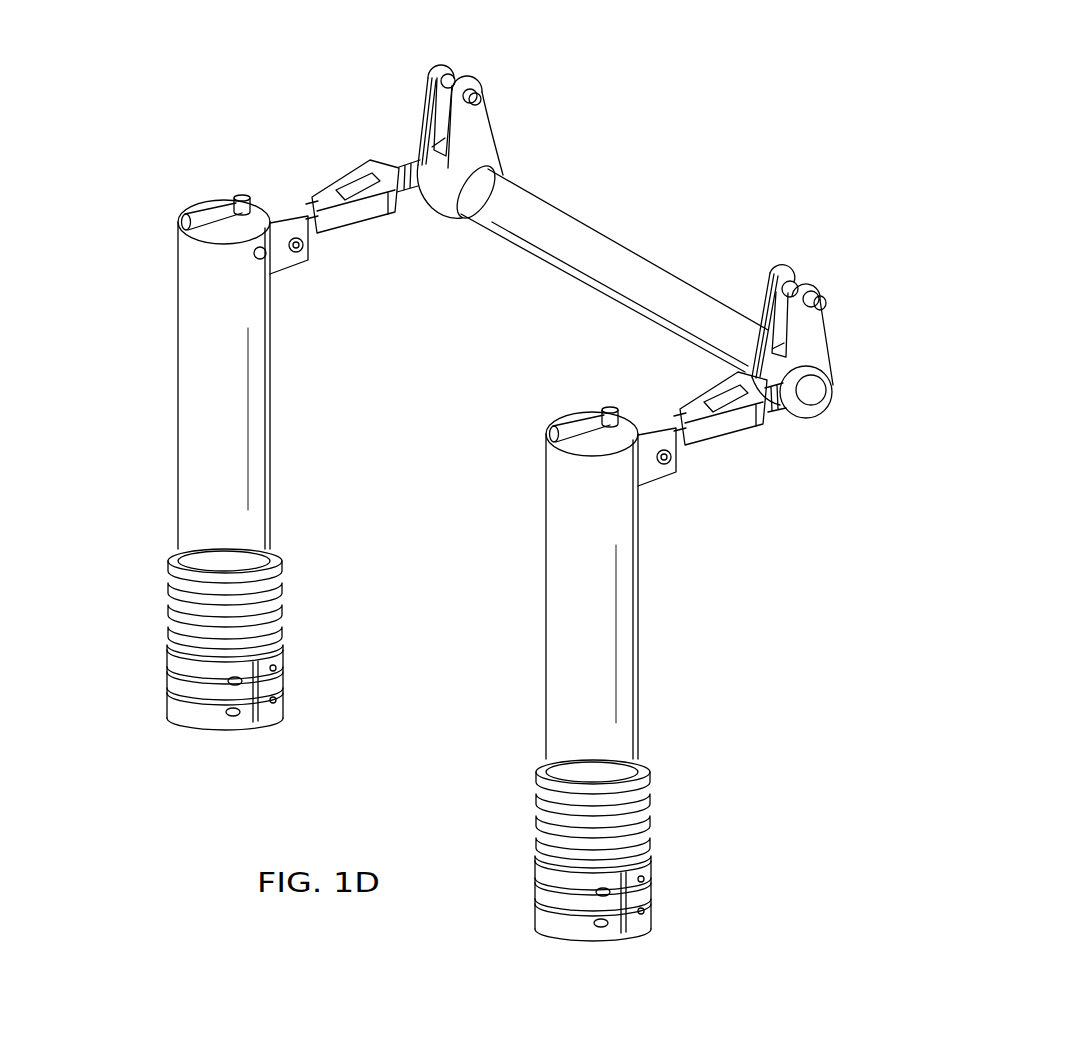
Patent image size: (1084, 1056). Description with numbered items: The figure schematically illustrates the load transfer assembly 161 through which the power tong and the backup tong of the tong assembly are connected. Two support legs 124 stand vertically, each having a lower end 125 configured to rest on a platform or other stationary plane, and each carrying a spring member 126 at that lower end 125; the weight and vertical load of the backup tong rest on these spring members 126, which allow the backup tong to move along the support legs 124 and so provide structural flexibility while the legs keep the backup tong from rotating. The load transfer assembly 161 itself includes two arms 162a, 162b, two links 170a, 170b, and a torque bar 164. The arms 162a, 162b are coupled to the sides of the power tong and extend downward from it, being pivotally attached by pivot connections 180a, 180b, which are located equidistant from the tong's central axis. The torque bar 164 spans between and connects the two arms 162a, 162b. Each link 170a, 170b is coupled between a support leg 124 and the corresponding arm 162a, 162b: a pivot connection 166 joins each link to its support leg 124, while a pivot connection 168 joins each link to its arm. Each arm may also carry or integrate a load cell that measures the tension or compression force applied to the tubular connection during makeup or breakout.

The load transfer assembly 161 is at (166, 139).
The support leg 124 is at (203, 457).
The spring member 126 is at (170, 573).
The lower end 125 is at (257, 727).
The pivot connection 166 is at (298, 253).
The torque bar 164 is at (580, 220).
The arm 162b is at (476, 125).
The arm 162a is at (813, 340).
The pivot connection 180b is at (436, 64).
The pivot connection 180a is at (775, 268).
The link 170b is at (403, 165).
The link 170a is at (780, 400).
The pivot connection 168 is at (812, 393).